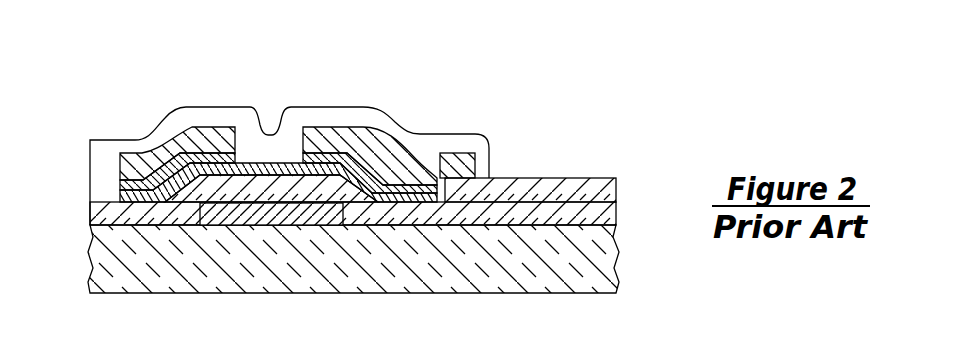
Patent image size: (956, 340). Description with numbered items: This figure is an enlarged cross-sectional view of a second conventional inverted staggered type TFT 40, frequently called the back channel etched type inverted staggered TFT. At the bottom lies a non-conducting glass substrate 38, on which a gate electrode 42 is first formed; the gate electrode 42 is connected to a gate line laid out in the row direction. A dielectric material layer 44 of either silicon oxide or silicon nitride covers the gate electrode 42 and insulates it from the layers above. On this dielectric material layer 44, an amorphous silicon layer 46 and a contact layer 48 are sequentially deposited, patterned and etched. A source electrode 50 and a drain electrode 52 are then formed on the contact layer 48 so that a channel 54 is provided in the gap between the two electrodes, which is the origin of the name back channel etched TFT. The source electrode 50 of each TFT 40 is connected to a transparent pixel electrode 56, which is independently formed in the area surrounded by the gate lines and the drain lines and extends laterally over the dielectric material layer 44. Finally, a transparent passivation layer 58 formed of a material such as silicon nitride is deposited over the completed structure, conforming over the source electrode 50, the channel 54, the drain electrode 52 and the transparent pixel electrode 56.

The non-conducting glass substrate 38 is at (597, 266).
The inverted staggered type TFT 40 is at (371, 178).
The gate electrode 42 is at (228, 214).
The dielectric material layer 44 is at (606, 212).
The amorphous silicon layer 46 is at (436, 200).
The contact layer 48 is at (372, 172).
The source electrode 50 is at (333, 120).
The drain electrode 52 is at (162, 115).
The channel 54 is at (268, 153).
The transparent pixel electrode 56 is at (614, 188).
The transparent passivation layer 58 is at (484, 150).